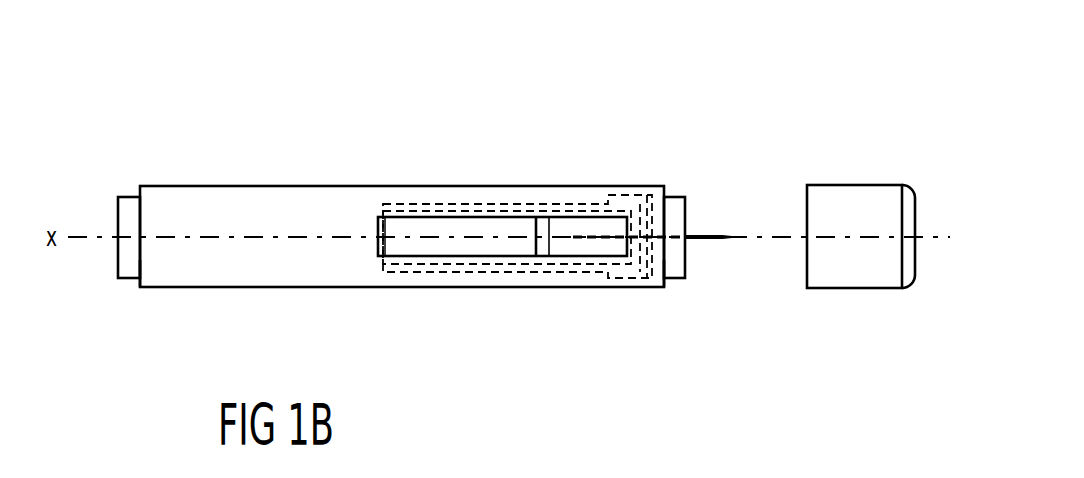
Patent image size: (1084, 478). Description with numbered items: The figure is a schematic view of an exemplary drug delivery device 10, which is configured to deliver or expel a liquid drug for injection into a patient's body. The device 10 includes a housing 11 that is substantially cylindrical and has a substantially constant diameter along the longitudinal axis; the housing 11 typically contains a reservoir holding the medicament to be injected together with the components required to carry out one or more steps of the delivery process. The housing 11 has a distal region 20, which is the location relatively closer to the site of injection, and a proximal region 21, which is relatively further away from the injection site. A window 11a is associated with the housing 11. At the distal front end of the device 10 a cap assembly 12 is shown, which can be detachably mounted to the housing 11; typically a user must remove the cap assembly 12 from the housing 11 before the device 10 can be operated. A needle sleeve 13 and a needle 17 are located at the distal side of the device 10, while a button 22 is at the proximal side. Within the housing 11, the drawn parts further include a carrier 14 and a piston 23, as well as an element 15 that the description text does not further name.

The drug delivery device 10 is at (650, 124).
The housing 11 is at (538, 195).
The window 11a is at (440, 213).
The cap assembly 12 is at (865, 202).
The needle sleeve 13 is at (681, 200).
The carrier 14 is at (413, 268).
The cartridge holder 15 is at (460, 263).
The needle 17 is at (720, 233).
The distal region 20 is at (655, 285).
The proximal region 21 is at (145, 282).
The button 22 is at (132, 205).
The piston 23 is at (545, 250).